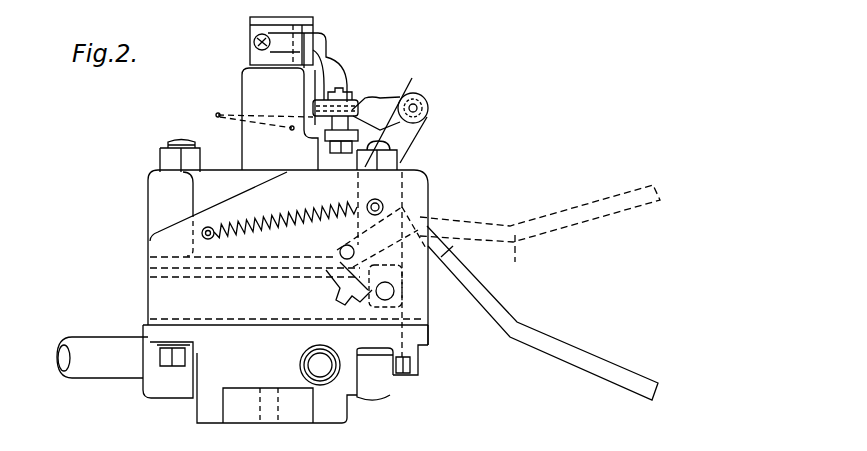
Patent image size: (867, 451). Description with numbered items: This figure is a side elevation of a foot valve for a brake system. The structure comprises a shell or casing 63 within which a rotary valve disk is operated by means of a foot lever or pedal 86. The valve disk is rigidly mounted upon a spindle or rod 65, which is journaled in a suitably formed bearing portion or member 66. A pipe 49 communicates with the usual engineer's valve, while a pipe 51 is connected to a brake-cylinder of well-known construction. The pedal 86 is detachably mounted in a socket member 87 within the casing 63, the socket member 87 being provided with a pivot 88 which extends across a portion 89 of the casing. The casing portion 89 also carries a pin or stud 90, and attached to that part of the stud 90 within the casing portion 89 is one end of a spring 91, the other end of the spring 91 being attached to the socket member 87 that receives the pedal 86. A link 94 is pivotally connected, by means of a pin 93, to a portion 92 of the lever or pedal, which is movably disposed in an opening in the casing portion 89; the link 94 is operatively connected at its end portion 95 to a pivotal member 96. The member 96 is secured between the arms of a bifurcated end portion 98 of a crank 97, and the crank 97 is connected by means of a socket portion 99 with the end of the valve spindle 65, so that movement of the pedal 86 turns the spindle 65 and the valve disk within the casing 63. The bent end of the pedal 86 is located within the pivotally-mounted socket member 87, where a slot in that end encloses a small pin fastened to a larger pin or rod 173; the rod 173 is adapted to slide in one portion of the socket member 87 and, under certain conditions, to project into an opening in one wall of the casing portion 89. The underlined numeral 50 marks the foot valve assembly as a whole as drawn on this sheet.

The pipe 49 is at (112, 376).
The housing 50 is at (501, 177).
The pipe 51 is at (306, 369).
The shell or casing 63 is at (153, 178).
The spindle or rod 65 is at (277, 53).
The bearing portion or member 66 is at (245, 95).
The foot lever or pedal 86 is at (495, 305).
The socket member 87 is at (306, 307).
The pivot 88 is at (394, 292).
The casing portion 89 is at (424, 326).
The pin or stud 90 is at (216, 236).
The spring 91 is at (281, 212).
The portion of the lever or pedal 92 is at (405, 136).
The pin 93 is at (427, 116).
The link 94 is at (396, 116).
The end portion 95 is at (321, 130).
The pivotal member 96 is at (342, 110).
The crank 97 is at (333, 62).
The bifurcated end portion 98 is at (323, 100).
The socket portion 99 is at (306, 25).
The pin or rod 173 is at (341, 250).